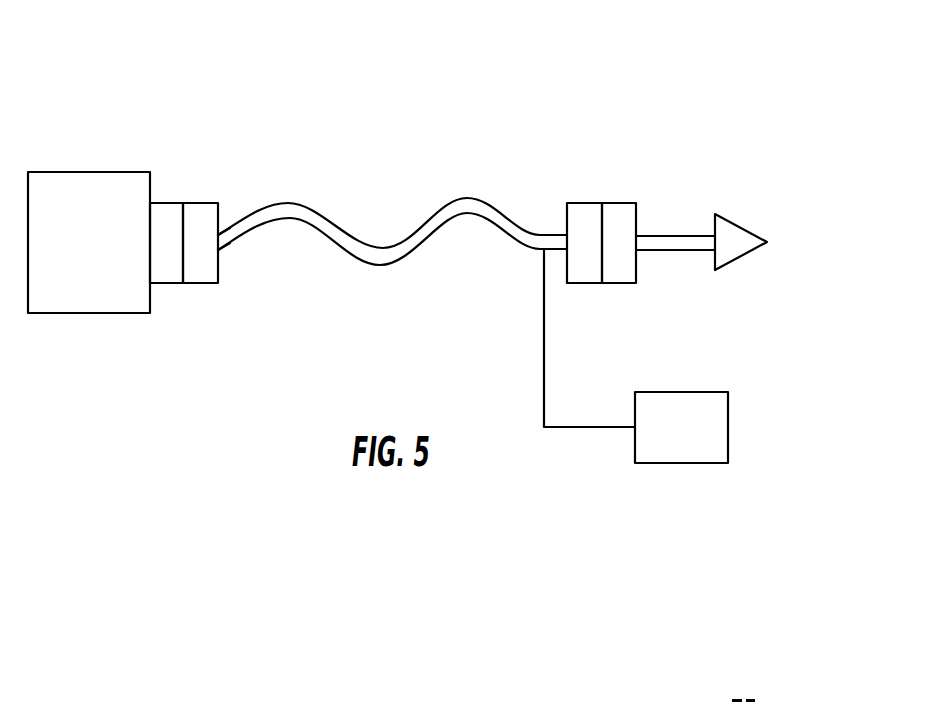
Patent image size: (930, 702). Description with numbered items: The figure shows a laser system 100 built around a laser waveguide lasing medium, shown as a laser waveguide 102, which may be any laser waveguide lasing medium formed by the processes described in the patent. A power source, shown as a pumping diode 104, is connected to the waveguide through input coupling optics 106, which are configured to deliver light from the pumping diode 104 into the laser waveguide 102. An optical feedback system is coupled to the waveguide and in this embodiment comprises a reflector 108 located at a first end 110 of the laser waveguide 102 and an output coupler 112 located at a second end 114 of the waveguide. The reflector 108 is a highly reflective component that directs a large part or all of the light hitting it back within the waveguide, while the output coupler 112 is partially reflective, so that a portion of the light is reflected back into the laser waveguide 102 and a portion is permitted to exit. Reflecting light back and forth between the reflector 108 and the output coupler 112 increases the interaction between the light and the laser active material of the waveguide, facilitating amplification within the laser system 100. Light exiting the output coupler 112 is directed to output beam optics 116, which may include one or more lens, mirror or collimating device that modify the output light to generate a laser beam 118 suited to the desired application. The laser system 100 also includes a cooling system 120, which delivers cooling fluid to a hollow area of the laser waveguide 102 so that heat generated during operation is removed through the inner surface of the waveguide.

The laser system 100 is at (737, 70).
The laser waveguide 102 is at (332, 225).
The pumping diode 104 is at (50, 183).
The input coupling optics 106 is at (163, 210).
The reflector 108 is at (200, 278).
The first end 110 is at (228, 262).
The output coupler 112 is at (585, 210).
The second end 114 is at (541, 207).
The output beam optics 116 is at (622, 215).
The laser beam 118 is at (730, 235).
The cooling system 120 is at (701, 440).